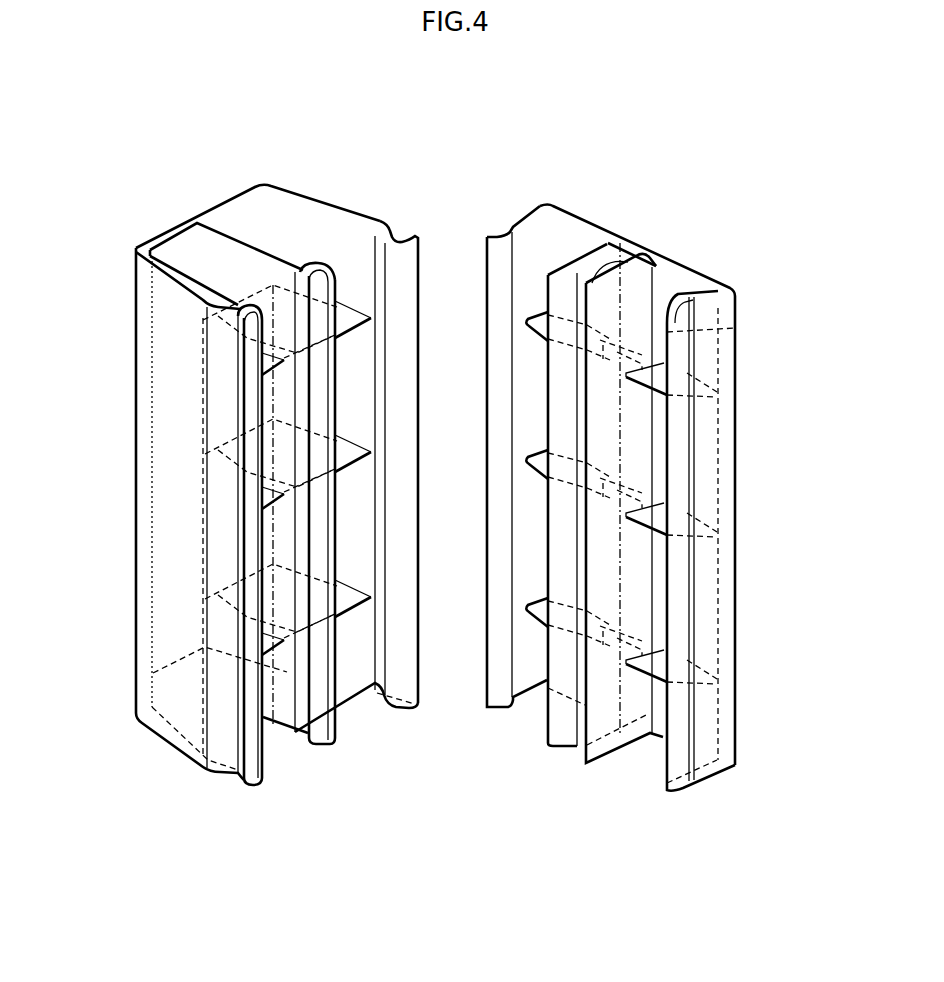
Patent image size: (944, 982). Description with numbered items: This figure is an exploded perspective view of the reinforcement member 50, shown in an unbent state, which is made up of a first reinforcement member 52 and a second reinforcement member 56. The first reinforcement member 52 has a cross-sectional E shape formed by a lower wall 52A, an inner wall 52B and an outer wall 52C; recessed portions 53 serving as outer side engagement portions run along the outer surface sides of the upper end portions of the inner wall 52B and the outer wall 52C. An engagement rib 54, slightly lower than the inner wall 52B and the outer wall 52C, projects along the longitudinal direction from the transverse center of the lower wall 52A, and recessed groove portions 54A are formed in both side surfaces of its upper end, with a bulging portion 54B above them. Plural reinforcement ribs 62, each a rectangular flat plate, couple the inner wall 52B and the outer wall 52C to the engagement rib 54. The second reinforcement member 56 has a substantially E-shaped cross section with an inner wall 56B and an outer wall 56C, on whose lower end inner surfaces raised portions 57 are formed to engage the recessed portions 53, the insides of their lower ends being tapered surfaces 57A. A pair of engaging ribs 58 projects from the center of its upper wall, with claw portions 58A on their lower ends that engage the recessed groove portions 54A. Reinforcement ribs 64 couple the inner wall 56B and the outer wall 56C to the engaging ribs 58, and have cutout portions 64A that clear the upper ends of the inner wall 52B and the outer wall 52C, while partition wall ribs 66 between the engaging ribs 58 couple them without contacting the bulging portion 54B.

The reinforcement member 50 is at (299, 128).
The first reinforcement member 52 is at (280, 483).
The lower wall 52A is at (180, 248).
The inner wall 52B is at (303, 217).
The outer wall 52C is at (160, 287).
The recessed portion 53 is at (400, 236).
The engagement rib 54 is at (227, 253).
The recessed groove portion 54A is at (317, 267).
The bulging portion 54B is at (320, 744).
The second reinforcement member 56 is at (618, 476).
The inner wall 56B is at (530, 228).
The outer wall 56C is at (703, 353).
The raised portion 57 is at (510, 272).
The tapered surface 57A is at (497, 248).
The engaging rib 58 is at (578, 263).
The claw portion 58A is at (628, 263).
The reinforcement rib 62 is at (353, 313).
The reinforcement rib 64 is at (653, 373).
The cutout portion 64A is at (527, 327).
The partition wall rib 66 is at (735, 328).